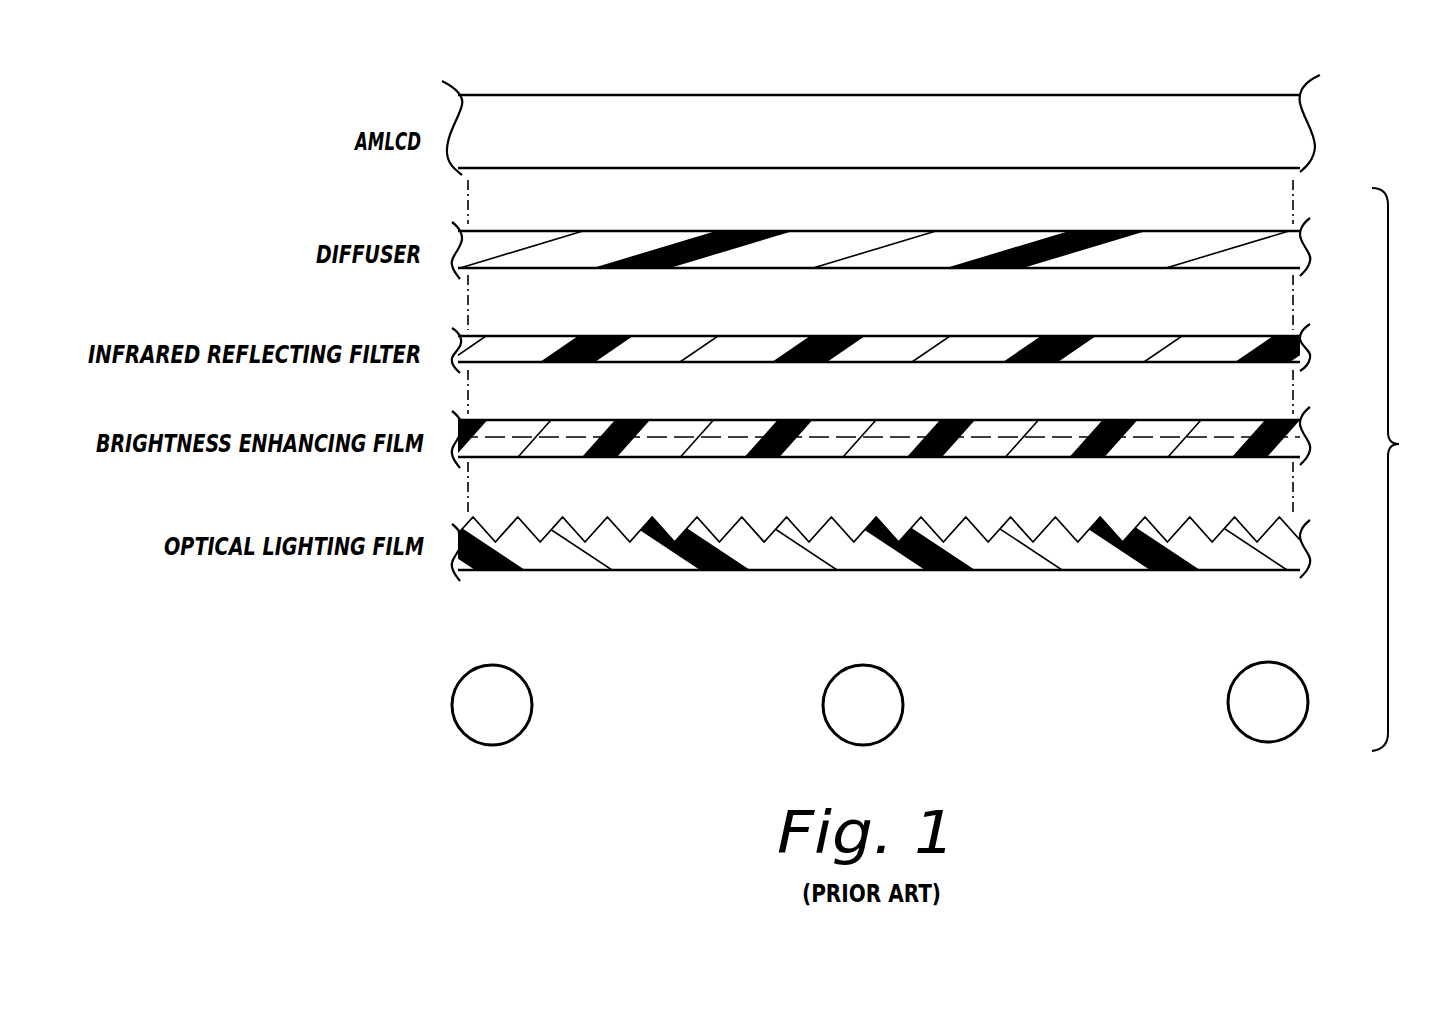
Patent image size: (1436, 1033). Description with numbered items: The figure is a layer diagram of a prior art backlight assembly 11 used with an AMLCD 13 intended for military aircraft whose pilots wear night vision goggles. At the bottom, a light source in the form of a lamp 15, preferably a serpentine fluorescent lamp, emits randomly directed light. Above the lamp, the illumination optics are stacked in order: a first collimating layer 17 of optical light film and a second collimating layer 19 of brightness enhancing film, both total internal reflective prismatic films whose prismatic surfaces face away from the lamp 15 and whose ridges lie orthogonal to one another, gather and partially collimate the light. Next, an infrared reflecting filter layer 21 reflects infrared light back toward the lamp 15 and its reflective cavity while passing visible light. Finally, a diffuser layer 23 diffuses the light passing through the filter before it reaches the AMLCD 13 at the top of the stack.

The backlight assembly 11 is at (1404, 469).
The AMLCD 13 is at (1313, 128).
The lamp 15 is at (1302, 659).
The first collimating layer 17 is at (1308, 544).
The second collimating layer 19 is at (1308, 435).
The infrared reflecting filter layer 21 is at (1308, 341).
The diffuser layer 23 is at (1306, 247).